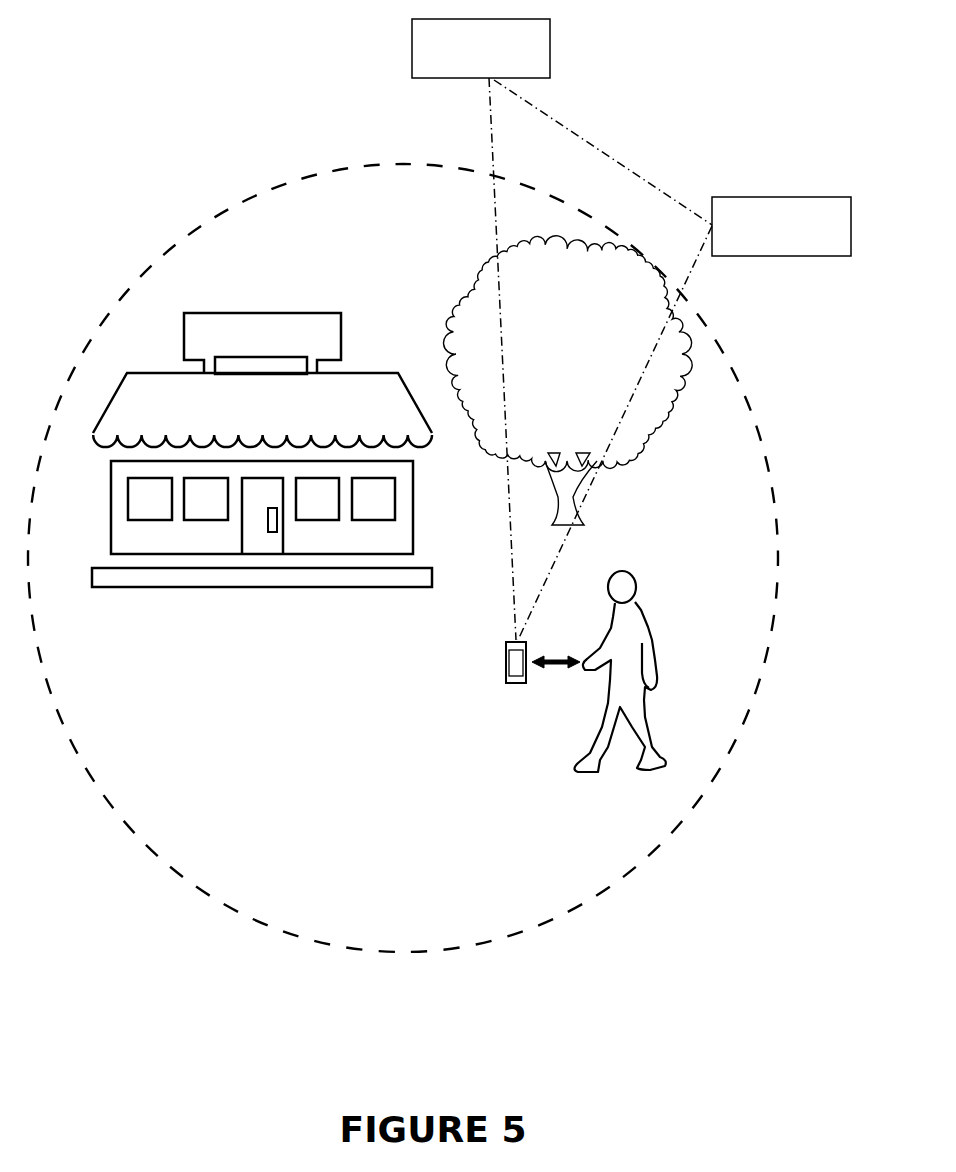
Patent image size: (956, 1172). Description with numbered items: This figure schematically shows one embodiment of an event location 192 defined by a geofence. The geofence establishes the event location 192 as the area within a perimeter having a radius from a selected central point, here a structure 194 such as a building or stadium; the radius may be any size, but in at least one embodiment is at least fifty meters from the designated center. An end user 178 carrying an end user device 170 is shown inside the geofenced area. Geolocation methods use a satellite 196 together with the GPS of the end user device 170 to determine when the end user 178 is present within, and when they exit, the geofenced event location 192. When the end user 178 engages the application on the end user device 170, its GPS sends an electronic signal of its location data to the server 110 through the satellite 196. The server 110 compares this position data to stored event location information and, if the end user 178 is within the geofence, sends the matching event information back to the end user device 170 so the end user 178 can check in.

The satellite 196 is at (550, 38).
The server 110 is at (766, 197).
The event location 192 is at (348, 168).
The structure 194 is at (213, 312).
The end user 178 is at (643, 610).
The end user device 170 is at (506, 665).